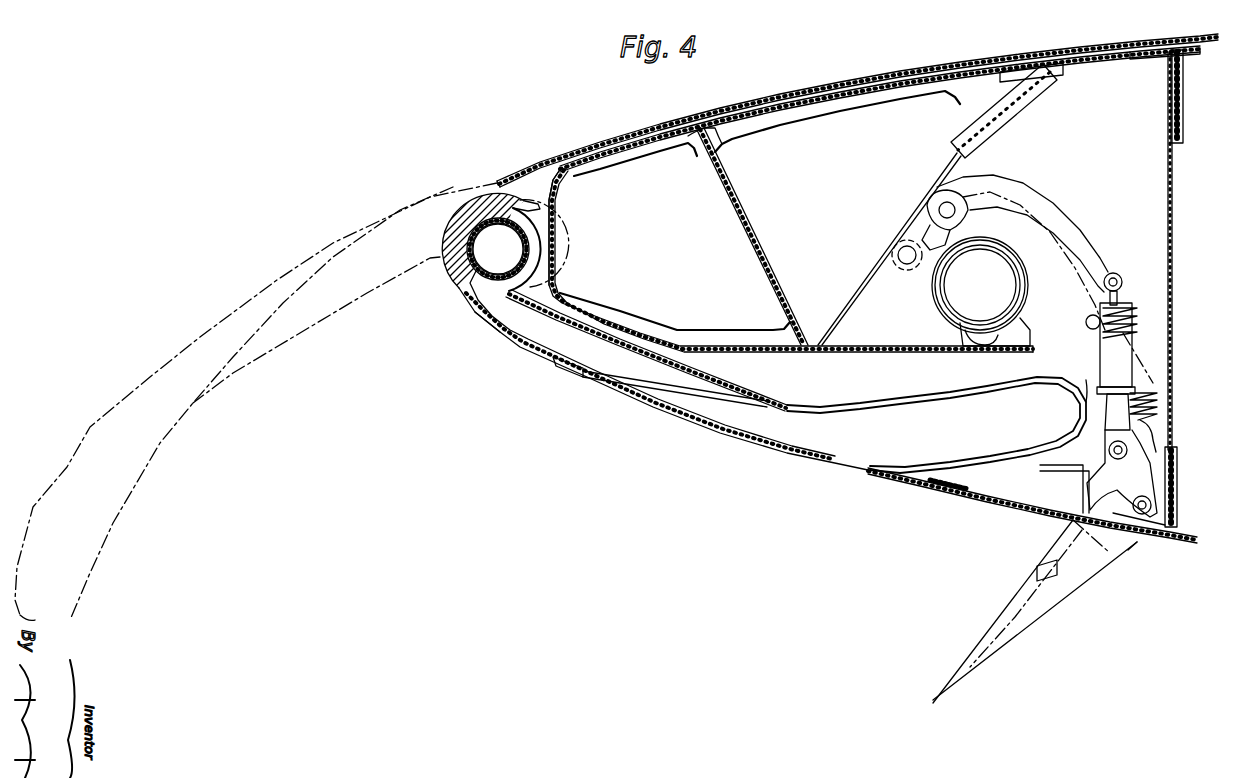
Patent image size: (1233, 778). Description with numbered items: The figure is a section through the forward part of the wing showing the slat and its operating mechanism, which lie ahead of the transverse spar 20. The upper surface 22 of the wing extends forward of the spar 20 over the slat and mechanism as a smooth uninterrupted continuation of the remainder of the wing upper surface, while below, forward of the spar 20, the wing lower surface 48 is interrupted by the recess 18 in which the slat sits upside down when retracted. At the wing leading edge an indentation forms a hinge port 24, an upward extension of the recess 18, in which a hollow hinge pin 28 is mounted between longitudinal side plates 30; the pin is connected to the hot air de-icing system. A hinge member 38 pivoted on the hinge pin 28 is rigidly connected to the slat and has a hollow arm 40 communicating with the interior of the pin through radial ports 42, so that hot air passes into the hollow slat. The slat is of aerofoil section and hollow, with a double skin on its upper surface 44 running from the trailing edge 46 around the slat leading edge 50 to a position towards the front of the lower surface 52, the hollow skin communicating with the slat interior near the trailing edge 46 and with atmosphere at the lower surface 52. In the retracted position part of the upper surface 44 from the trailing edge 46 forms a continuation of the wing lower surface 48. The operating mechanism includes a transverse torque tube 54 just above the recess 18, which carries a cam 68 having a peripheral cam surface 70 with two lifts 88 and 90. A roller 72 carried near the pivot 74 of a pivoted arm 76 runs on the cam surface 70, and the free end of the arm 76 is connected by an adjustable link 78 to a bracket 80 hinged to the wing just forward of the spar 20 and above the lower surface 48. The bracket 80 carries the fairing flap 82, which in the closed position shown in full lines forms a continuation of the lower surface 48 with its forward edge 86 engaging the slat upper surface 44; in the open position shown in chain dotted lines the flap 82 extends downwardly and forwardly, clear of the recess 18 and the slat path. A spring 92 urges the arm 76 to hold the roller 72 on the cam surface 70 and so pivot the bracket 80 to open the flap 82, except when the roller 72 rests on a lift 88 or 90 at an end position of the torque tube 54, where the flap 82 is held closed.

The recess 18 is at (873, 388).
The transverse spar 20 is at (1171, 225).
The upper surface 22 is at (893, 73).
The hinge port 24 is at (498, 183).
The hollow hinge pin 28 is at (531, 245).
The longitudinal side plate 30 is at (550, 214).
The hinge member 38 is at (488, 326).
The hollow arm 40 is at (720, 360).
The radial port 42 is at (470, 249).
The slat upper surface 44 is at (278, 280).
The trailing edge 46 is at (530, 352).
The lower surface 48 is at (1180, 542).
The slat leading edge 50 is at (1087, 375).
The lower surface 52 is at (888, 398).
The torque tube 54 is at (1023, 309).
The cam 68 is at (946, 322).
The peripheral cam surface 70 is at (933, 295).
The roller 72 is at (937, 198).
The pivot 74 is at (897, 251).
The pivoted arm 76 is at (1043, 205).
The adjustable link 78 is at (1110, 350).
The bracket 80 is at (1123, 477).
The fairing flap 82 is at (987, 503).
The forward edge 86 is at (870, 472).
The lift 88 is at (967, 207).
The lift 90 is at (983, 345).
The spring 92 is at (1148, 398).